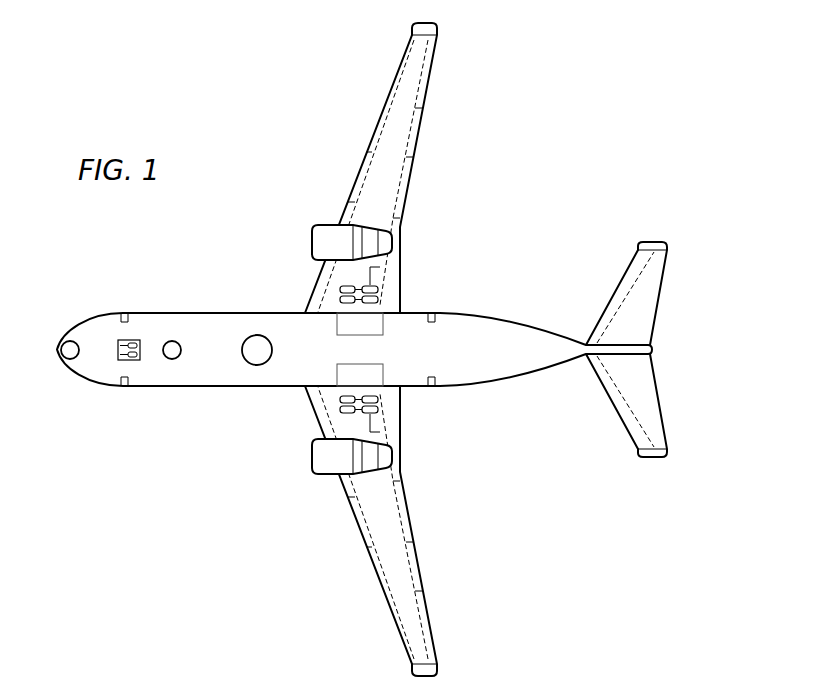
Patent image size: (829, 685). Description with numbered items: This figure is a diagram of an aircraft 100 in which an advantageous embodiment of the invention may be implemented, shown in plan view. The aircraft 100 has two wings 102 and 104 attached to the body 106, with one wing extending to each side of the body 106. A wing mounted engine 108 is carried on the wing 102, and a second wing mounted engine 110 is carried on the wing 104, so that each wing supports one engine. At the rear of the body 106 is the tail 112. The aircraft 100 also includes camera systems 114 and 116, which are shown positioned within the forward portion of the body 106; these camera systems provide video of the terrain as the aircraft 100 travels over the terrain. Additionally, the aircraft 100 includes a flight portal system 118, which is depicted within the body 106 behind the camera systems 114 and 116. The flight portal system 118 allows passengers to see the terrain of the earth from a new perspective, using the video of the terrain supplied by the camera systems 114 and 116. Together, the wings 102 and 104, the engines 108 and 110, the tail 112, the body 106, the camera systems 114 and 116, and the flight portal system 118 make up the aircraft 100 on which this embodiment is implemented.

The aircraft 100 is at (249, 122).
The wing 102 is at (366, 147).
The wing 104 is at (366, 552).
The body 106 is at (210, 313).
The wing mounted engine 108 is at (312, 241).
The wing mounted engine 110 is at (312, 458).
The tail 112 is at (659, 292).
The camera system 114 is at (66, 342).
The camera system 116 is at (180, 355).
The flight portal system 118 is at (272, 350).